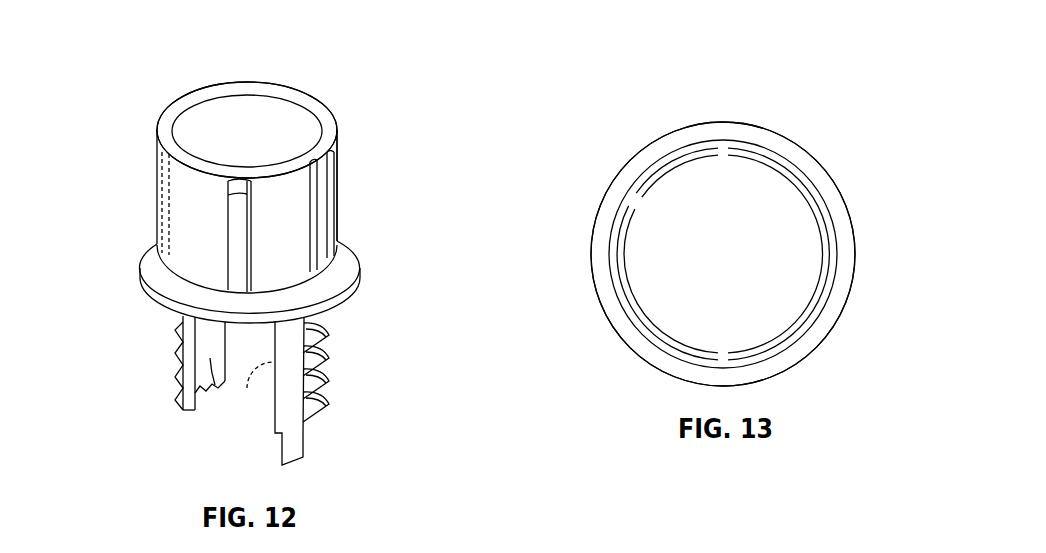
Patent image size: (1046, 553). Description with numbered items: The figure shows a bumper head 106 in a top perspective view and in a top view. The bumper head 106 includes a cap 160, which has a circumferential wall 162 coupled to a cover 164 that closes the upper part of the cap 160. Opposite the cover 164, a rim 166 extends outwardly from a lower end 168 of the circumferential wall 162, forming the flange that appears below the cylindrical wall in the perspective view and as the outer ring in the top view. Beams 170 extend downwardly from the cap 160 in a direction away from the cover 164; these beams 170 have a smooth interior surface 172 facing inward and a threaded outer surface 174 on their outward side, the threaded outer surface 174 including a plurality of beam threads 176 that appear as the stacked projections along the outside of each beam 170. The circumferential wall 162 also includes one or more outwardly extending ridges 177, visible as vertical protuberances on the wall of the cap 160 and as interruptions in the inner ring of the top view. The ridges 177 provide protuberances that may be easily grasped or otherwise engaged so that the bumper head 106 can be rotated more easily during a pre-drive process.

In FIG. 12, the bumper head 106 is at (172, 63).
In FIG. 13, the bumper head 106 is at (628, 125).
In FIG. 12, the cap 160 is at (318, 108).
In FIG. 13, the cap 160 is at (792, 257).
In FIG. 12, the circumferential wall 162 is at (338, 200).
In FIG. 13, the circumferential wall 162 is at (758, 152).
In FIG. 12, the cover 164 is at (270, 83).
In FIG. 13, the cover 164 is at (757, 212).
In FIG. 12, the rim 166 is at (353, 267).
In FIG. 13, the rim 166 is at (850, 292).
In FIG. 12, the lower end 168 is at (337, 233).
In FIG. 12, the beams 170 is at (175, 375).
In FIG. 12, the smooth interior surface 172 is at (212, 388).
In FIG. 12, the threaded outer surface 174 is at (177, 333).
In FIG. 12, the beam threads 176 is at (177, 355).
In FIG. 12, the ridges 177 is at (238, 230).